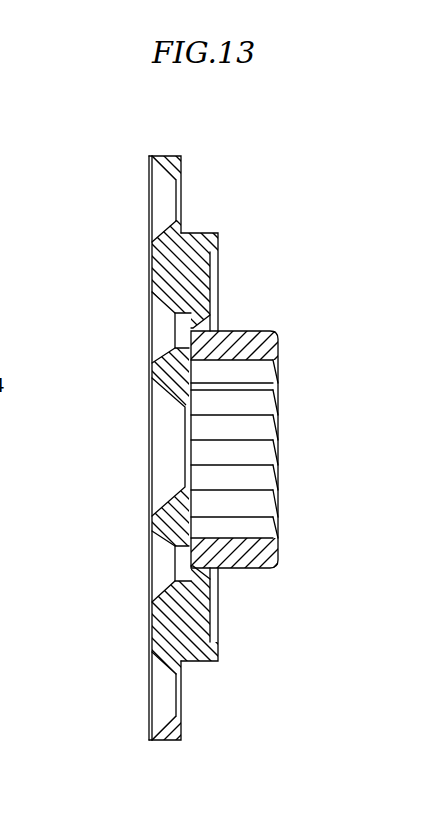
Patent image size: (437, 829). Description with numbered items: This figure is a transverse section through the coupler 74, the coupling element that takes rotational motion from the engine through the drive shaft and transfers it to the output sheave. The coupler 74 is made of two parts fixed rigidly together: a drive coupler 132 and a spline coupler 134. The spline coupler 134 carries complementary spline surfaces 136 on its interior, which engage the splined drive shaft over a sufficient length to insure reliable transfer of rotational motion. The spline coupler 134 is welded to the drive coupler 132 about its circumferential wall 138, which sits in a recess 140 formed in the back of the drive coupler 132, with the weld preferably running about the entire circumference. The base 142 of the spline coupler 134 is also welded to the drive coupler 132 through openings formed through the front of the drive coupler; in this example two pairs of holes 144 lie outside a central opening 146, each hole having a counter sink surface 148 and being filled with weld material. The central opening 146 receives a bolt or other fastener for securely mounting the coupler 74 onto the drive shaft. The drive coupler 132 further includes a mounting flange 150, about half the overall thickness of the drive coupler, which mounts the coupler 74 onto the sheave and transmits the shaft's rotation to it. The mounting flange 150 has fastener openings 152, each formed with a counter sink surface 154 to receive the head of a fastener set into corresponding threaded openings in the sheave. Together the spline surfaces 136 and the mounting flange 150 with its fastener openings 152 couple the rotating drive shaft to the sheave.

The coupler 74 is at (100, 146).
The drive coupler 132 is at (178, 155).
The spline coupler 134 is at (258, 331).
The spline surfaces 136 is at (262, 430).
The circumferential wall 138 is at (216, 323).
The recess 140 is at (210, 281).
The base 142 is at (176, 561).
The holes 144 is at (150, 330).
The central opening 146 is at (150, 443).
The counter sink surface 148 is at (158, 556).
The mounting flange 150 is at (157, 742).
The fastener openings 152 is at (181, 199).
The counter sink surface 154 is at (163, 196).